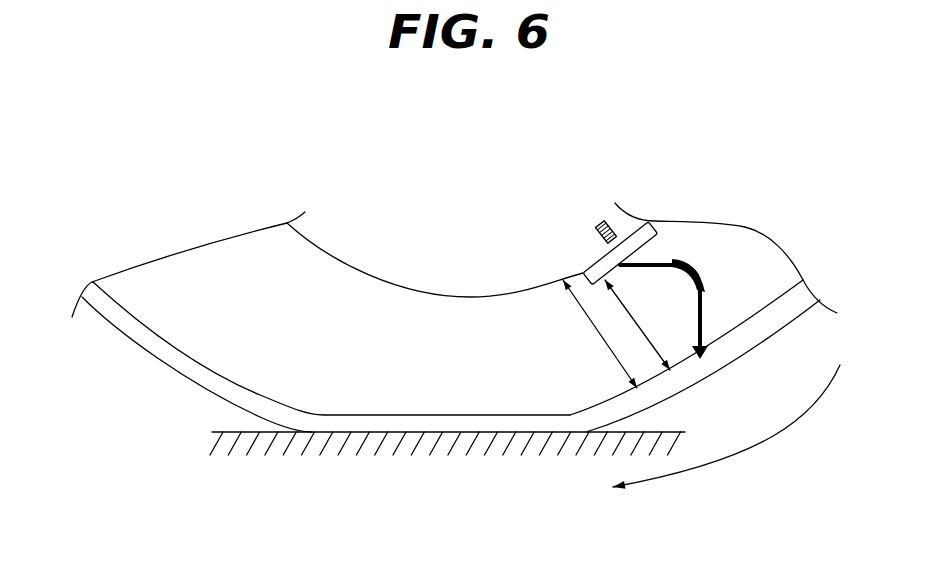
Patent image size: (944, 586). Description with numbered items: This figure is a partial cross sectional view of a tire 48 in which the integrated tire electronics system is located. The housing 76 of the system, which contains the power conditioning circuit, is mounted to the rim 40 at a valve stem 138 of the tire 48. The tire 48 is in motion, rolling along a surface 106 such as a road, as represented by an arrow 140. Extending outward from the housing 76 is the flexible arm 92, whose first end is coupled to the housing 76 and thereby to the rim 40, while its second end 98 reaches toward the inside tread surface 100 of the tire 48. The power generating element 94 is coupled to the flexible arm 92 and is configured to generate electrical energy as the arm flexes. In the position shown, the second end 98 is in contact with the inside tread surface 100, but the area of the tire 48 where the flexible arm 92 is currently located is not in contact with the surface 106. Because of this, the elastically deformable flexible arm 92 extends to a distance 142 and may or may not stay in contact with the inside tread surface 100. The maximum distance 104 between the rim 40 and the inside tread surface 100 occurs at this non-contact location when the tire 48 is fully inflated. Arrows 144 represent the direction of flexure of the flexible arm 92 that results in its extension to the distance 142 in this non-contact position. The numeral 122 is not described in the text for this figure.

The rim 40 is at (322, 251).
The tire 48 is at (102, 306).
The inside tread surface 100 is at (202, 368).
The surface 106 is at (230, 432).
The housing 76 is at (597, 262).
The valve stem 138 is at (597, 220).
The maximum distance 104 is at (590, 321).
The distance 142 is at (625, 313).
The arrows 144 is at (642, 278).
The heel portion 122 is at (695, 232).
The power generating element 94 is at (698, 268).
The flexible arm 92 is at (705, 322).
The second end 98 is at (693, 349).
The arrow 140 is at (793, 428).